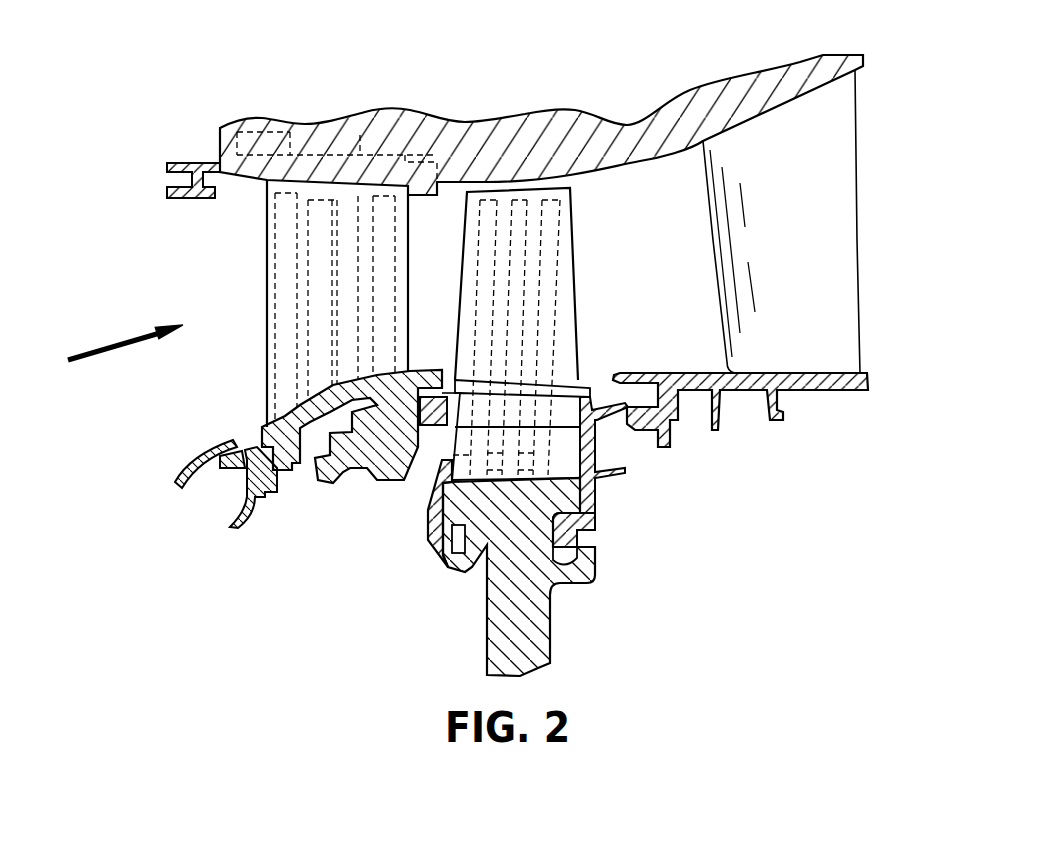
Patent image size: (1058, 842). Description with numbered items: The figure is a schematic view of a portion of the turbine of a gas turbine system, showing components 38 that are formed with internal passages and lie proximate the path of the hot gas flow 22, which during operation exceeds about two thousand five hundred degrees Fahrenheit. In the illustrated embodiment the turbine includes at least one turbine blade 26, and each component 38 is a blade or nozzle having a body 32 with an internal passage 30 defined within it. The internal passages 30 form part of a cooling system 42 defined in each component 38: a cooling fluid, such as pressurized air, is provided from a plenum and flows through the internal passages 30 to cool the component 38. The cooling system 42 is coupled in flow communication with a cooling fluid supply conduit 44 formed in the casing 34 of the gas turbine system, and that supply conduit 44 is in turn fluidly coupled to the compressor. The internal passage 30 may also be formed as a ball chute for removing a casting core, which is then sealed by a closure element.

The hot gas flow 22 is at (112, 345).
The turbine blade 26 is at (602, 373).
The internal passage 30 is at (398, 208).
The body 32 is at (565, 267).
The casing 34 is at (320, 122).
The component 38 is at (448, 312).
The cooling system 42 is at (380, 207).
The cooling fluid supply conduit 44 is at (296, 505).